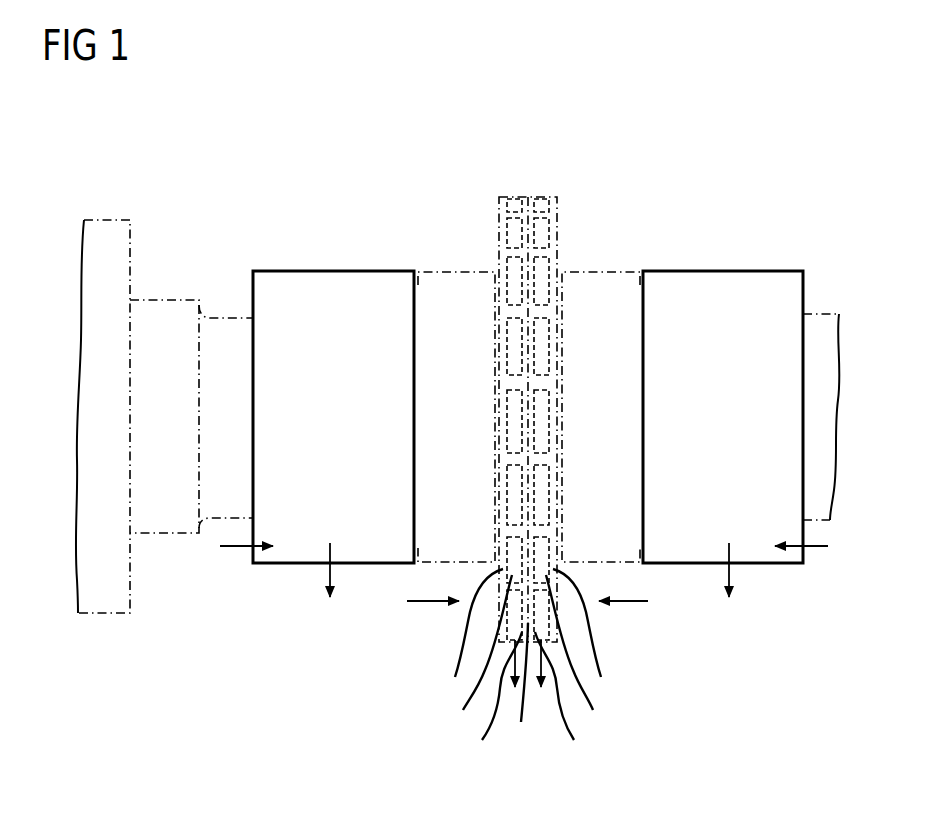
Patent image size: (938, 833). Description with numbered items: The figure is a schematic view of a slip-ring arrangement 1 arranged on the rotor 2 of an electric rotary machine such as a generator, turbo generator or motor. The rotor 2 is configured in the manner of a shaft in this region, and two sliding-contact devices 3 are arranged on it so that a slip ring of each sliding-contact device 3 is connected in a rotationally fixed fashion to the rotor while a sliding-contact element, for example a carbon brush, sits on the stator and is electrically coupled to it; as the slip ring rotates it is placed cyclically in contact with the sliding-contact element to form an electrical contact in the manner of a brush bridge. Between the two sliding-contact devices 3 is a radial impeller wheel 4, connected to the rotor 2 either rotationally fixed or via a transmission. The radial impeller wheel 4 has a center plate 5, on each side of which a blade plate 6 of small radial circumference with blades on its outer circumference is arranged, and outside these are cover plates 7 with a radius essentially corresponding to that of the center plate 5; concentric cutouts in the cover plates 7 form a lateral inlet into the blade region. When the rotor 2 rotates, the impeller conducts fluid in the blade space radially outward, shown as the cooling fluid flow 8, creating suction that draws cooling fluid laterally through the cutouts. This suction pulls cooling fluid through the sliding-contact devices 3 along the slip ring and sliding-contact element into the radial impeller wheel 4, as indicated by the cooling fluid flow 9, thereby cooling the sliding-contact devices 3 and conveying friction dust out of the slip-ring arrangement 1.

The slip-ring arrangement 1 is at (107, 160).
The rotor 2 is at (158, 300).
The sliding-contact device 3 is at (323, 271).
The radial impeller wheel 4 is at (530, 197).
The center plate 5 is at (520, 693).
The blade plate 6 is at (525, 660).
The cover plate 7 is at (527, 632).
The cooling fluid flow 8 is at (526, 705).
The cooling fluid flow 9 is at (233, 546).